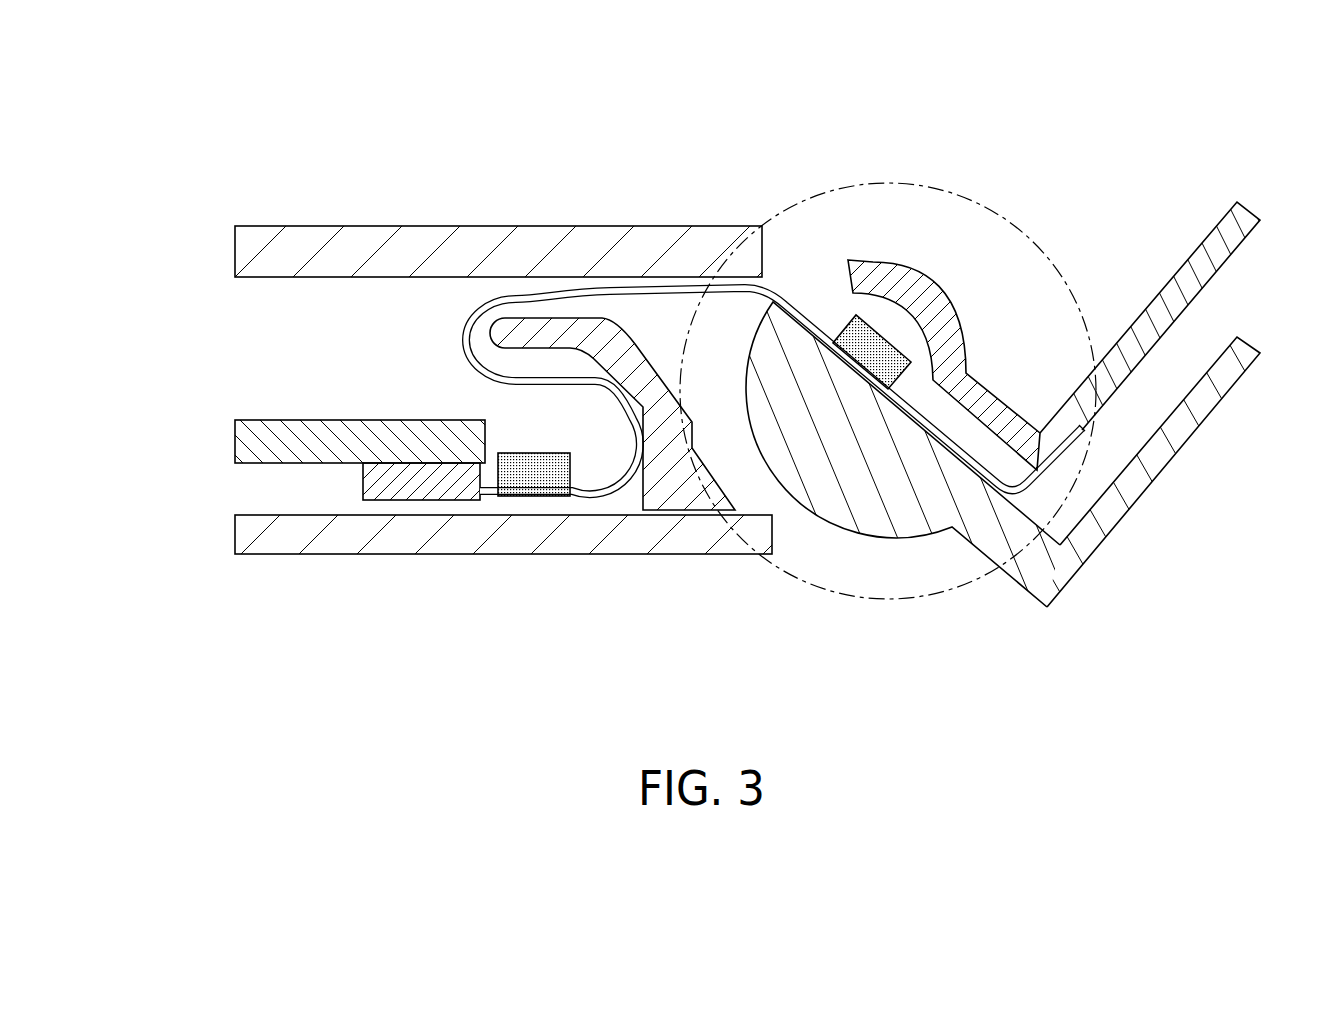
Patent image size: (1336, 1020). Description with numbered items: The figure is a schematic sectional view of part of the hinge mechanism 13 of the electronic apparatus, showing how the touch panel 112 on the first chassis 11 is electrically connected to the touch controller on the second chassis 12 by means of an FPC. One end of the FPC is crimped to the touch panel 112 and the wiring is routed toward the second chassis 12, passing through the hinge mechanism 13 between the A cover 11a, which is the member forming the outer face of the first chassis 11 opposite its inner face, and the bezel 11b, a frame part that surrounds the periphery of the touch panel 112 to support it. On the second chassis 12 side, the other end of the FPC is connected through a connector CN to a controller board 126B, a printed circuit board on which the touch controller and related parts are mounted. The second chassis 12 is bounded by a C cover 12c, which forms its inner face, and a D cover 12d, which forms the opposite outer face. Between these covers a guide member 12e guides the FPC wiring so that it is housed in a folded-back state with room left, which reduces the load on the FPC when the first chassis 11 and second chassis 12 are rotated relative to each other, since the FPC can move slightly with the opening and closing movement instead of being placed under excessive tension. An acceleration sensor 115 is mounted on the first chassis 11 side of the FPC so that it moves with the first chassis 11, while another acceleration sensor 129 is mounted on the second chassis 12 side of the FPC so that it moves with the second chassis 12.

The first chassis 11 is at (1190, 498).
The A cover 11a is at (1063, 573).
The bezel 11b is at (914, 279).
The touch panel 112 is at (1198, 248).
The acceleration sensor 115 is at (841, 316).
The second chassis 12 is at (534, 170).
The C cover 12c is at (352, 226).
The D cover 12d is at (330, 556).
The guide member 12e is at (651, 483).
The controller board 126B is at (234, 440).
The acceleration sensor 129 is at (538, 453).
The hinge mechanism 13 is at (883, 600).
The connector CN is at (363, 480).
The flexible printed circuits FPC is at (458, 348).